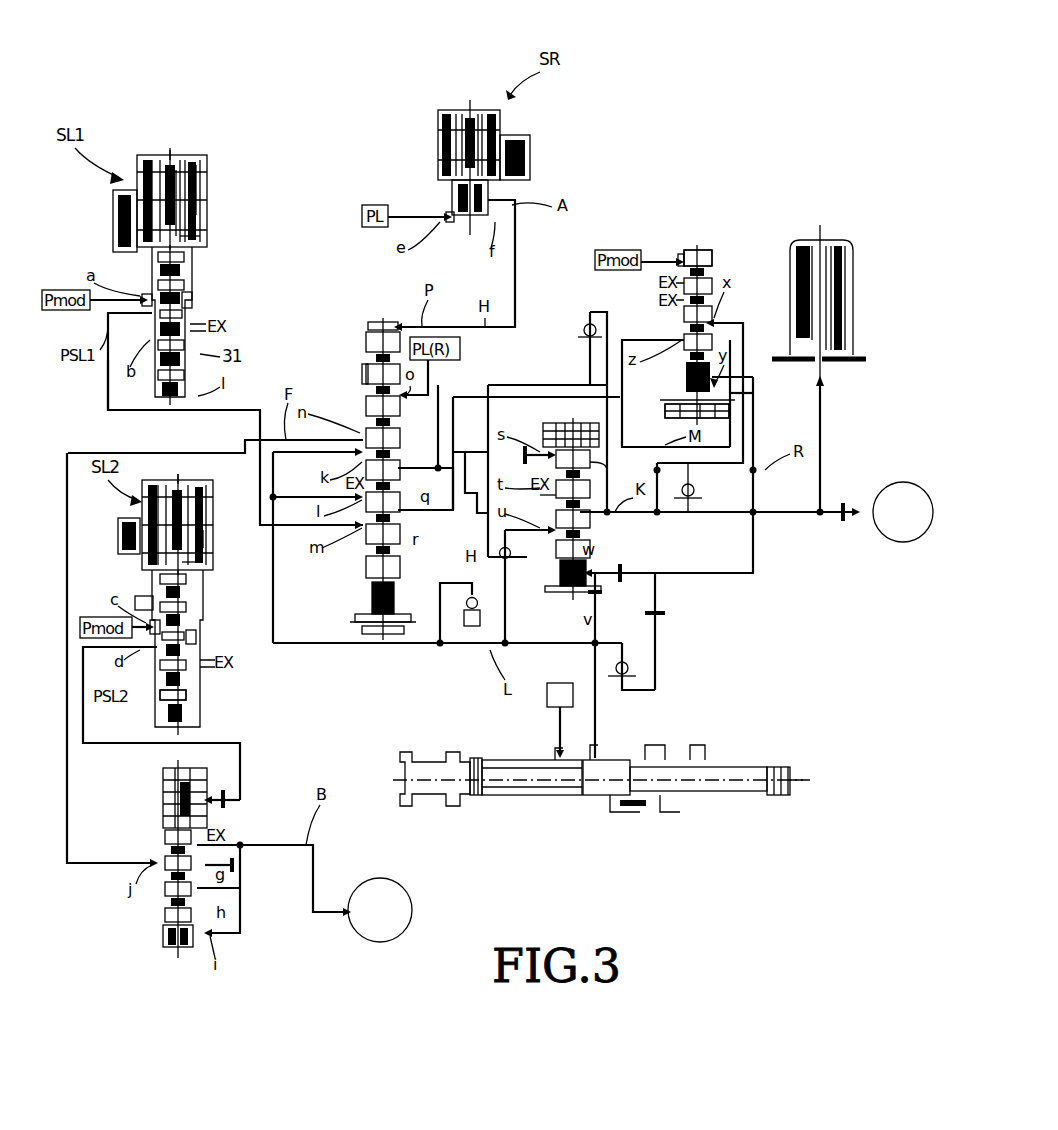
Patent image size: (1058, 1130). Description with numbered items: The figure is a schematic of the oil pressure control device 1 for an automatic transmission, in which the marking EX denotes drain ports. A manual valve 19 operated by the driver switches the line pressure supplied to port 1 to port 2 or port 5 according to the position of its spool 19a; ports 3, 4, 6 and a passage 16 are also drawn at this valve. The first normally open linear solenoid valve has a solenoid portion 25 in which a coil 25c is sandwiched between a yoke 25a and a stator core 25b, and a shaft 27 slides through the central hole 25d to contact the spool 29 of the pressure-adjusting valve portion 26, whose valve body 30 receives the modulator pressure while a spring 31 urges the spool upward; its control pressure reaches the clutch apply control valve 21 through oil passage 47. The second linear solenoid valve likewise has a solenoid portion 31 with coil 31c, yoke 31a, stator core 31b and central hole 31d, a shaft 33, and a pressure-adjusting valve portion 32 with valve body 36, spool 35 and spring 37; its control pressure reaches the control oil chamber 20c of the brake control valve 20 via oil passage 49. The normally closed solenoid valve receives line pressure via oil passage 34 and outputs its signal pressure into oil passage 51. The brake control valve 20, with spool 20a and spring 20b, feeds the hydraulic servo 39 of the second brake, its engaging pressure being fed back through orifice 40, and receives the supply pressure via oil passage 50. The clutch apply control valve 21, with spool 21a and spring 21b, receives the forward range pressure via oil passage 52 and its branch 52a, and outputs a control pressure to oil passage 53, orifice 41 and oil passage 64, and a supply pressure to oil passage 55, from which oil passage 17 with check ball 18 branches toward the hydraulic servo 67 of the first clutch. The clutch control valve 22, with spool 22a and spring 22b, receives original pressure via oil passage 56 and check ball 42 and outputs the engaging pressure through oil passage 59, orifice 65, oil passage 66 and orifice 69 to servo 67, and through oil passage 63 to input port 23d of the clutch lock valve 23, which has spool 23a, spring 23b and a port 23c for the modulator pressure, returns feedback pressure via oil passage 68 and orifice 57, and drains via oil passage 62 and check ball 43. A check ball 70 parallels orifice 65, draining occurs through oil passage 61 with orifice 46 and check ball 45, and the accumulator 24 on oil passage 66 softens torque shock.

The oil pressure control device 1 is at (555, 760).
The port 2 is at (590, 745).
The manual valve port 3 is at (622, 812).
The manual valve port 4 is at (670, 812).
The port 5 is at (683, 745).
The manual valve port 6 is at (453, 762).
The oil passage 16 is at (605, 708).
The oil passage 17 is at (545, 380).
The check ball 18 is at (583, 322).
The manual valve 19 is at (601, 774).
The spool 19a is at (590, 797).
The brake control valve 20 is at (153, 849).
The spool 20a is at (228, 803).
The spring 20b is at (160, 930).
The control oil chamber 20c is at (196, 775).
The clutch apply control valve 21 is at (358, 342).
The spool 21a is at (362, 400).
The spring 21b is at (368, 578).
The clutch control valve 22 is at (545, 425).
The spool 22a is at (600, 462).
The spring 22b is at (566, 586).
The clutch lock valve 23 is at (713, 243).
The spool 23a is at (714, 262).
The spring 23b is at (672, 390).
The port 23c is at (680, 255).
The input port 23d is at (756, 378).
The C-1 accumulator 24 is at (846, 232).
The solenoid portion 25 is at (212, 150).
The yoke 25a is at (215, 172).
The stator core 25b is at (210, 198).
The coil 25c is at (205, 243).
The central hole 25d is at (172, 152).
The pressure-adjusting valve portion 26 is at (196, 273).
The shaft 27 is at (205, 220).
The spool 29 is at (195, 297).
The valve body 30 is at (125, 258).
The spring 31 is at (218, 505).
The yoke 31a is at (210, 541).
The stator core 31b is at (210, 563).
The coil 31c is at (208, 586).
The central hole 31d is at (178, 478).
The pressure-adjusting valve portion 32 is at (204, 612).
The shaft 33 is at (118, 531).
The oil passage 34 is at (405, 215).
The spool 35 is at (200, 639).
The valve body 36 is at (135, 600).
The spring 37 is at (200, 690).
The hydraulic servo 39 is at (380, 943).
The orifice 40 is at (258, 872).
The orifice 41 is at (468, 455).
The check ball 42 is at (508, 562).
The check ball 43 is at (458, 648).
The check ball 45 is at (640, 676).
The orifice 46 is at (668, 613).
The oil passage 47 is at (270, 400).
The oil passage 49 is at (100, 743).
The oil passage 50 is at (108, 398).
The oil passage 51 is at (517, 250).
The oil passage 52 is at (348, 645).
The oil passage 52a is at (275, 497).
The oil passage 53 is at (436, 462).
The oil passage 55 is at (467, 495).
The oil passage 56 is at (520, 631).
The orifice 57 is at (603, 597).
The oil passage 59 is at (630, 548).
The oil passage 61 is at (640, 573).
The oil passage 62 is at (548, 385).
The oil passage 63 is at (756, 397).
The oil passage 64 is at (505, 385).
The orifice 65 is at (660, 475).
The oil passage 66 is at (810, 515).
The hydraulic servo 67 is at (903, 482).
The oil passage 68 is at (756, 432).
The orifice 69 is at (845, 502).
The check ball 70 is at (694, 497).